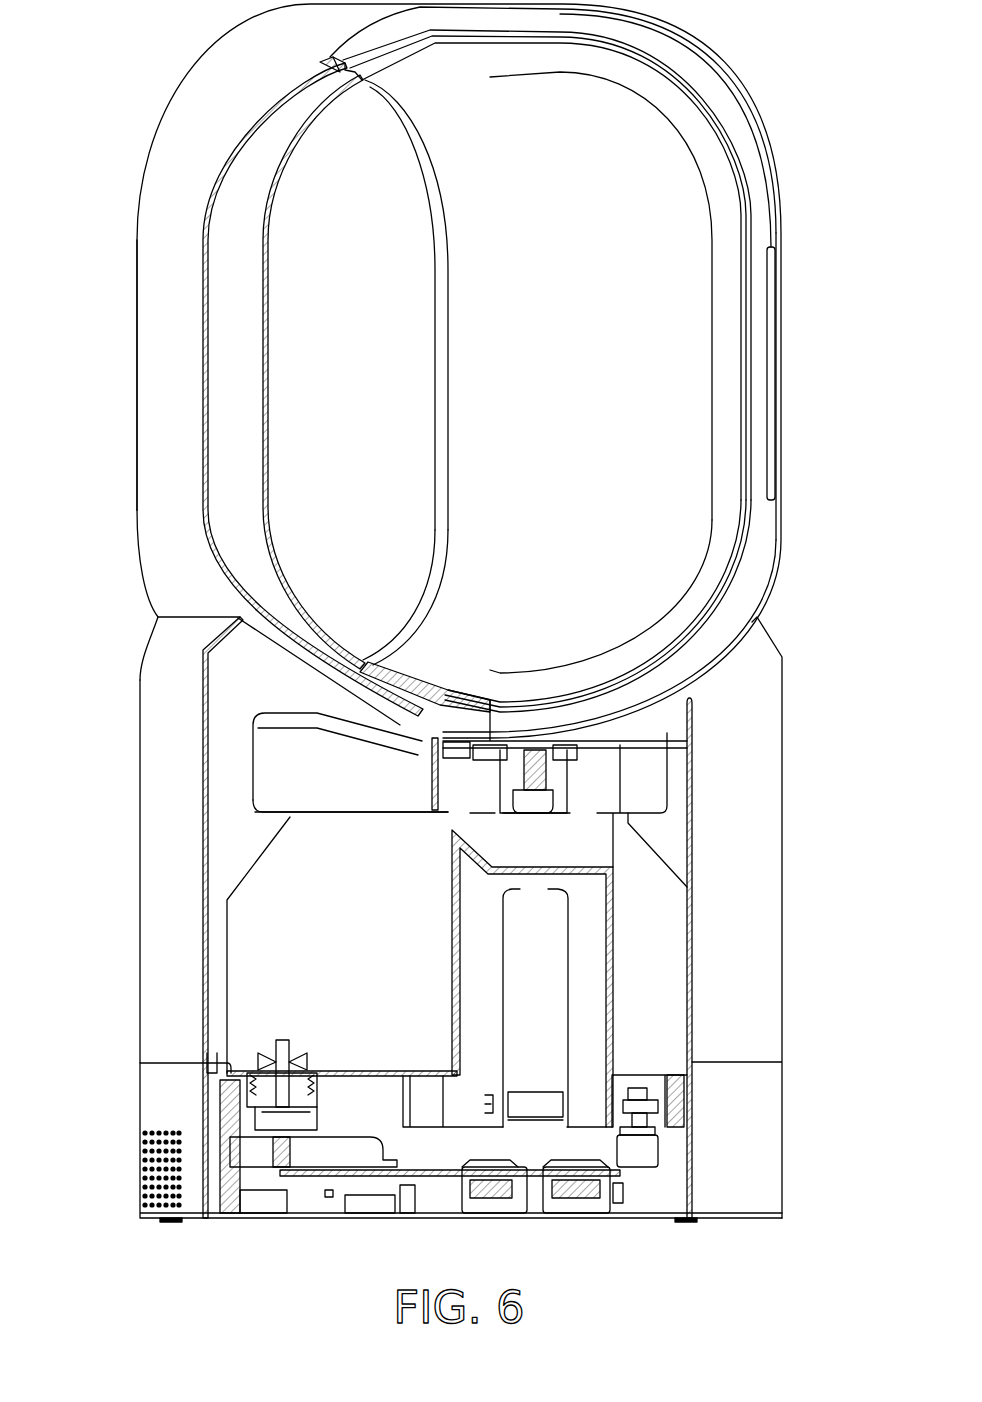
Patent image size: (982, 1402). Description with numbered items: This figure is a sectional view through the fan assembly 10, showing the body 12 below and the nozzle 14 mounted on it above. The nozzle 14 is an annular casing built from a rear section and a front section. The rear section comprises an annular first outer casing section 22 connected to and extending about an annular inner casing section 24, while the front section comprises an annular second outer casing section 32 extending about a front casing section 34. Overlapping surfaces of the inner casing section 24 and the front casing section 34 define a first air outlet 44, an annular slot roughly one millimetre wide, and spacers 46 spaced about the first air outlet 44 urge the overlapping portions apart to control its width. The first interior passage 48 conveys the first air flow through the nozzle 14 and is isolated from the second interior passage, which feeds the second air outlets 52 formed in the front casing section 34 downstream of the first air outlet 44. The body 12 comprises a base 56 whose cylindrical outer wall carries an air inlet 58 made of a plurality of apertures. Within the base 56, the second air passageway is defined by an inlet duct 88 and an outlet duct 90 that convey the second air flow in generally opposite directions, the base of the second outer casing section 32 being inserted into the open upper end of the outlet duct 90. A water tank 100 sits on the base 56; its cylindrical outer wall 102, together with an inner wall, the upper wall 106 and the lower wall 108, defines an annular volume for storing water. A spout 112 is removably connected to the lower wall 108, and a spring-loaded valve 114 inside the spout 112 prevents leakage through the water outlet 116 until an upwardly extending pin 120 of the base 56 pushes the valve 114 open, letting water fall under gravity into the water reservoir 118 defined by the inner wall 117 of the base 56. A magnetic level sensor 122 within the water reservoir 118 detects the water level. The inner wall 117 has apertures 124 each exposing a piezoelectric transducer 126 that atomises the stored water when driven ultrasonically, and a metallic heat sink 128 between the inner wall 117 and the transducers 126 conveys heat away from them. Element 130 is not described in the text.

The fan assembly 10 is at (118, 651).
The body 12 is at (118, 885).
The nozzle 14 is at (121, 201).
The first outer casing section 22 is at (205, 438).
The inner casing section 24 is at (270, 403).
The second outer casing section 32 is at (365, 712).
The front casing section 34 is at (407, 700).
The first air outlet 44 is at (750, 417).
The spacers 46 is at (753, 250).
The first interior passage 48 is at (217, 316).
The second air outlets 52 is at (771, 477).
The base 56 is at (150, 1083).
The air inlet 58 is at (140, 1173).
The inlet duct 88 is at (535, 1100).
The outlet duct 90 is at (595, 946).
The water tank 100 is at (215, 945).
The outer wall 102 is at (692, 898).
The upper wall 106 is at (273, 645).
The lower wall 108 is at (380, 1079).
The spout 112 is at (233, 1097).
The spring-loaded valve 114 is at (283, 1052).
The water outlet 116 is at (317, 1100).
The inner wall 117 is at (433, 1180).
The water reservoir 118 is at (460, 1140).
The pin 120 is at (290, 1148).
The magnetic level sensor 122 is at (637, 1088).
The apertures 124 is at (572, 1157).
The piezoelectric transducers 126 is at (495, 1190).
The heat sink 128 is at (620, 1187).
The switch 130 is at (331, 1199).